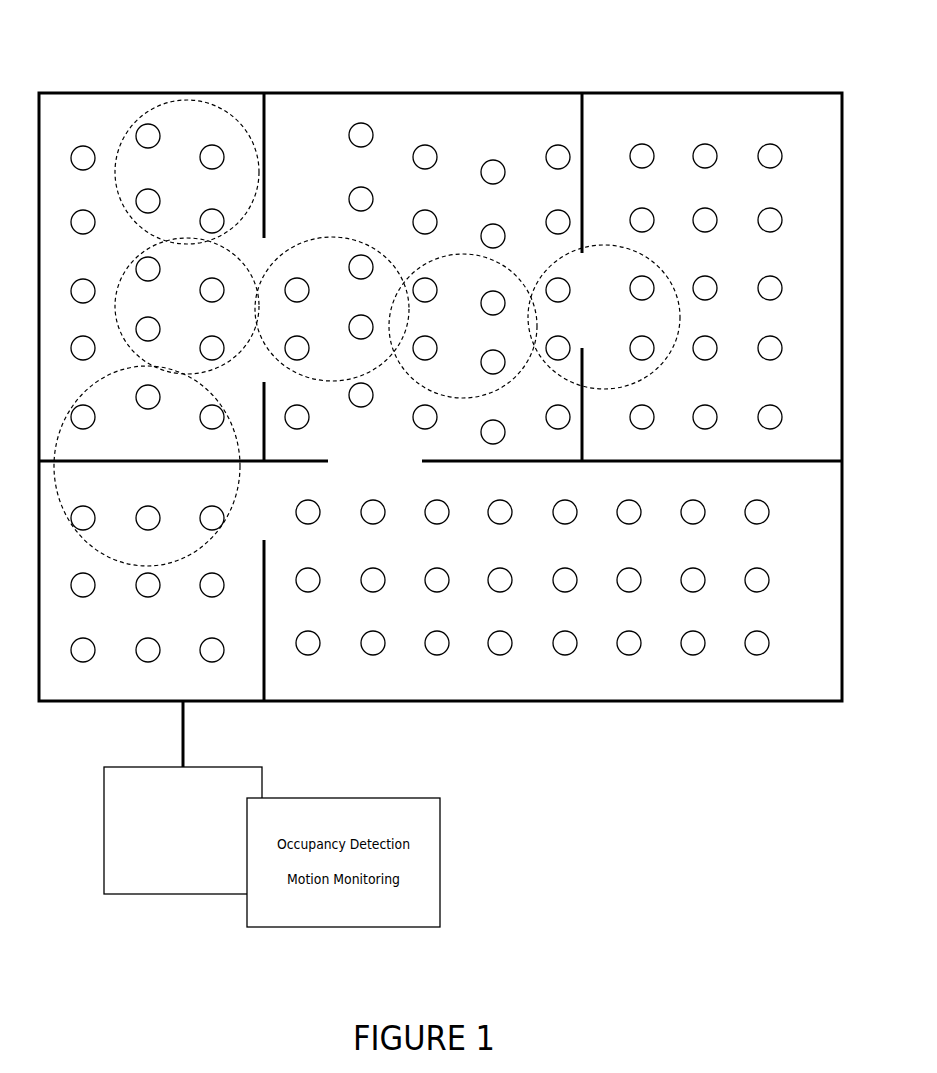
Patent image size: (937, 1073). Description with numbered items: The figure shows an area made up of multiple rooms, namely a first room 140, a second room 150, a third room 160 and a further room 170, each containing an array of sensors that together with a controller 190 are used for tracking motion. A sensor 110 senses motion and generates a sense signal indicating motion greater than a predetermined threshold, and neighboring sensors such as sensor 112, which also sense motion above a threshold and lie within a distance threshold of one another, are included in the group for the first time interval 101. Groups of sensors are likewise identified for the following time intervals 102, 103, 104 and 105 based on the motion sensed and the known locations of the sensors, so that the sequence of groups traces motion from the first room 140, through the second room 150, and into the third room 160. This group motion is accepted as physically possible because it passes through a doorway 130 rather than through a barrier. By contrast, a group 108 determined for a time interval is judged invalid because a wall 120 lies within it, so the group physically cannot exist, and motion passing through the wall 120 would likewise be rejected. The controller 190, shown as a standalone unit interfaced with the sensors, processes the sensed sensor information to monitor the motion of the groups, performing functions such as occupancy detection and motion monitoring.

The first time interval 101 is at (214, 137).
The time interval 102 is at (182, 310).
The time interval 103 is at (332, 327).
The time interval 104 is at (479, 344).
The time interval 105 is at (621, 331).
The group 108 is at (166, 442).
The sensor 110 is at (148, 125).
The sensor 112 is at (223, 157).
The wall 120 is at (123, 463).
The doorway 130 is at (264, 253).
The first room 140 is at (86, 134).
The second room 150 is at (526, 134).
The third room 160 is at (696, 134).
The room 170 is at (107, 694).
The controller 190 is at (200, 868).